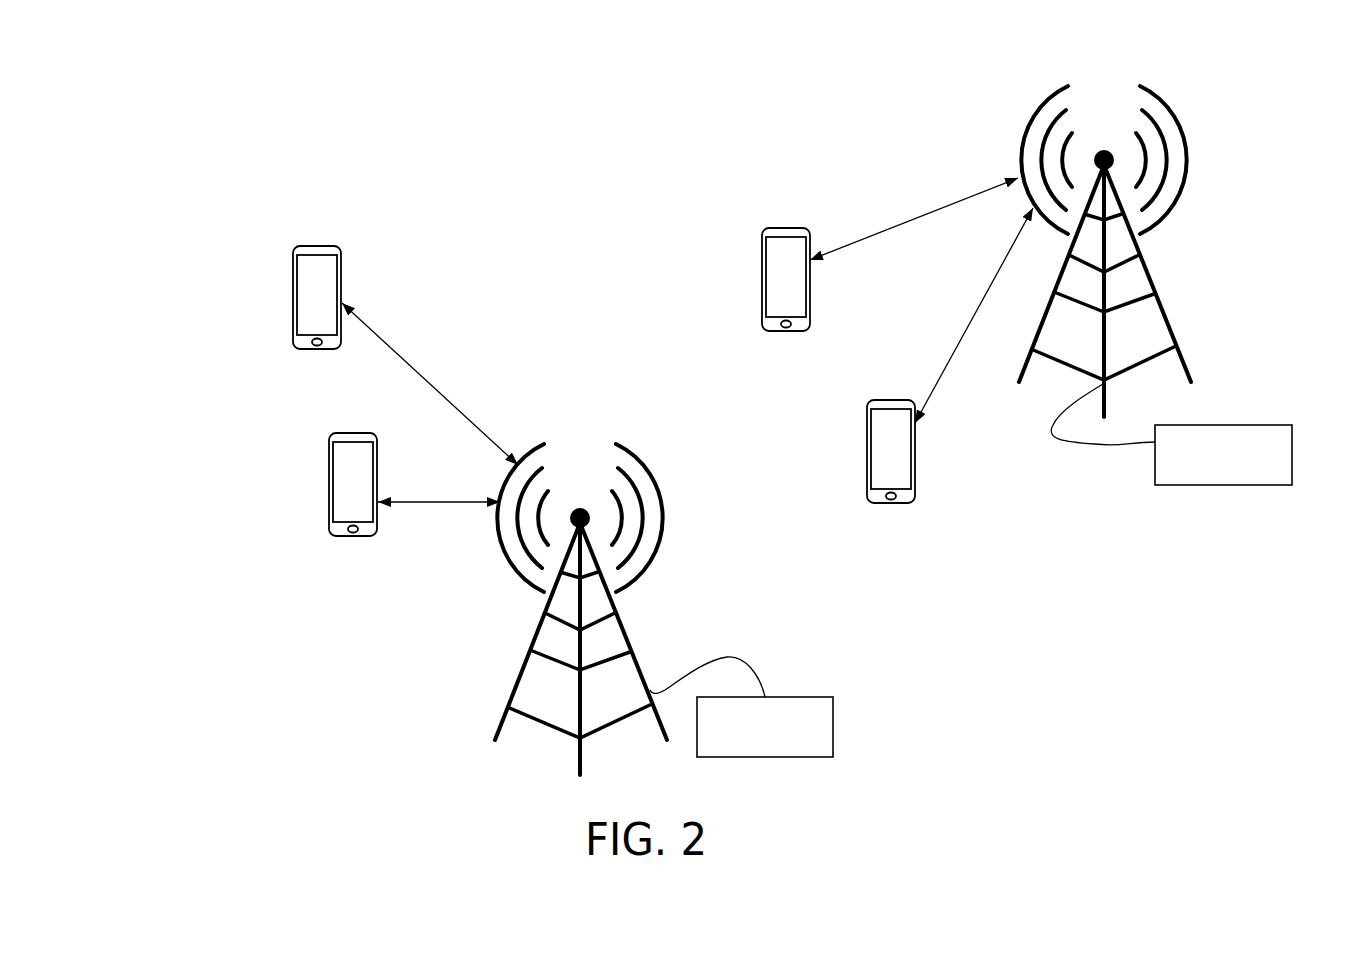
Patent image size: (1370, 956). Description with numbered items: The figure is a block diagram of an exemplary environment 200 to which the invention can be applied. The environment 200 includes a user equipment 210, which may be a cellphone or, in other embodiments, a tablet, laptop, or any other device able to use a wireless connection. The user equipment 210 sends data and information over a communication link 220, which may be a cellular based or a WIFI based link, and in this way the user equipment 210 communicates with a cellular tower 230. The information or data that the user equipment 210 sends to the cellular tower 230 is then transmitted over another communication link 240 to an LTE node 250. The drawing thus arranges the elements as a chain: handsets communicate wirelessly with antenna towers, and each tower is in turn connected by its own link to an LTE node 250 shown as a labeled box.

The environment 200 is at (337, 56).
The user equipment 210 is at (312, 220).
The communication link 220 is at (428, 380).
The cellular tower 230 is at (625, 628).
The communication link 240 is at (737, 658).
The LTE node 250 is at (747, 750).